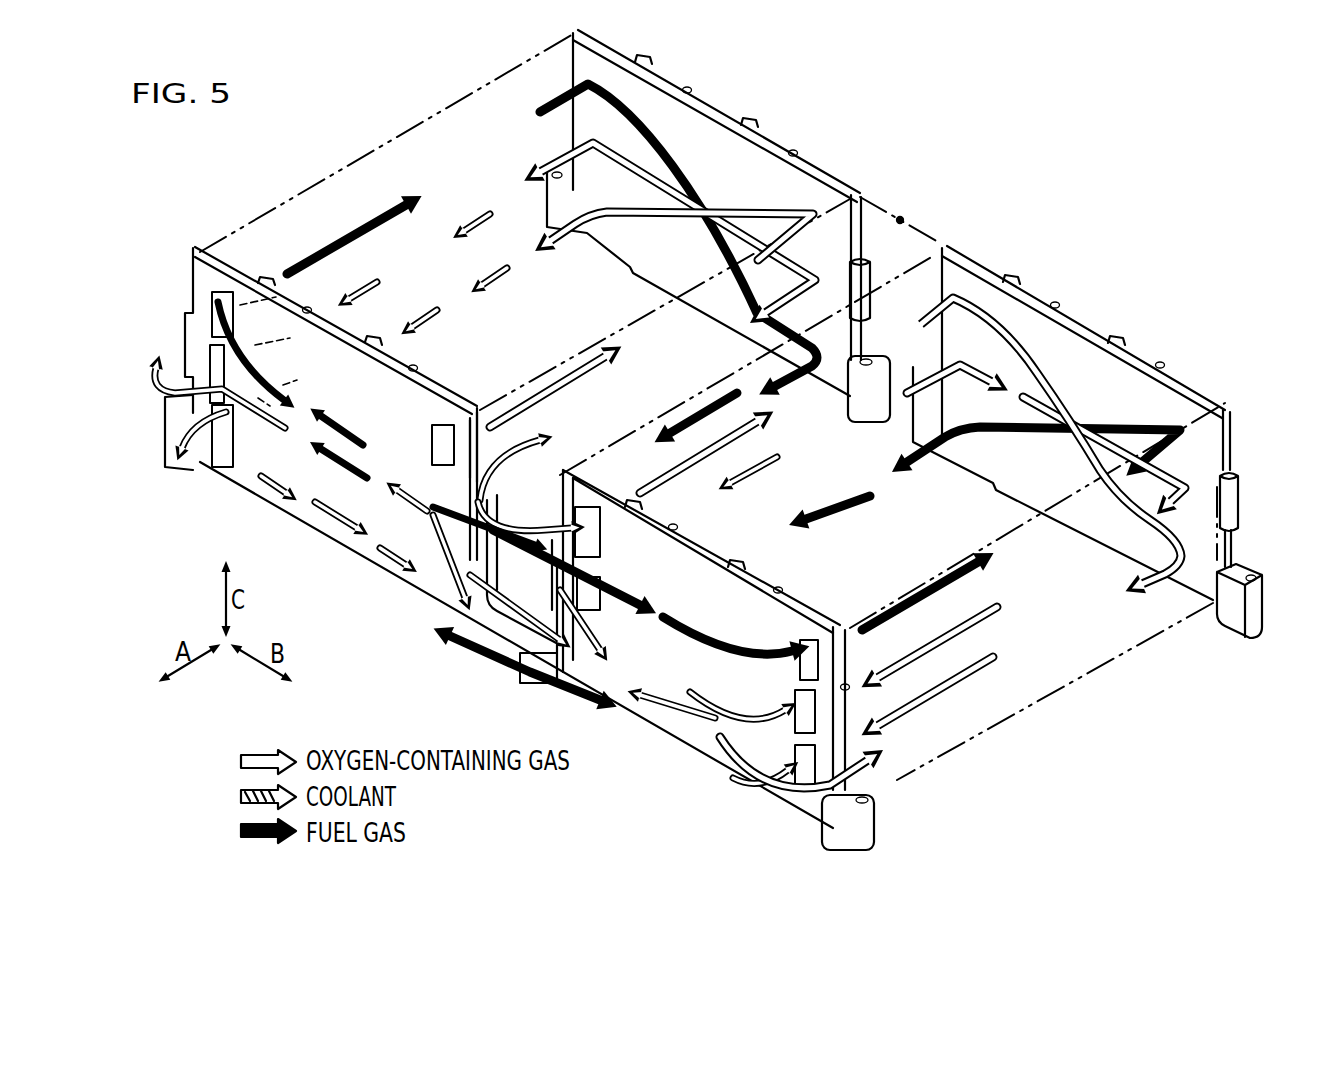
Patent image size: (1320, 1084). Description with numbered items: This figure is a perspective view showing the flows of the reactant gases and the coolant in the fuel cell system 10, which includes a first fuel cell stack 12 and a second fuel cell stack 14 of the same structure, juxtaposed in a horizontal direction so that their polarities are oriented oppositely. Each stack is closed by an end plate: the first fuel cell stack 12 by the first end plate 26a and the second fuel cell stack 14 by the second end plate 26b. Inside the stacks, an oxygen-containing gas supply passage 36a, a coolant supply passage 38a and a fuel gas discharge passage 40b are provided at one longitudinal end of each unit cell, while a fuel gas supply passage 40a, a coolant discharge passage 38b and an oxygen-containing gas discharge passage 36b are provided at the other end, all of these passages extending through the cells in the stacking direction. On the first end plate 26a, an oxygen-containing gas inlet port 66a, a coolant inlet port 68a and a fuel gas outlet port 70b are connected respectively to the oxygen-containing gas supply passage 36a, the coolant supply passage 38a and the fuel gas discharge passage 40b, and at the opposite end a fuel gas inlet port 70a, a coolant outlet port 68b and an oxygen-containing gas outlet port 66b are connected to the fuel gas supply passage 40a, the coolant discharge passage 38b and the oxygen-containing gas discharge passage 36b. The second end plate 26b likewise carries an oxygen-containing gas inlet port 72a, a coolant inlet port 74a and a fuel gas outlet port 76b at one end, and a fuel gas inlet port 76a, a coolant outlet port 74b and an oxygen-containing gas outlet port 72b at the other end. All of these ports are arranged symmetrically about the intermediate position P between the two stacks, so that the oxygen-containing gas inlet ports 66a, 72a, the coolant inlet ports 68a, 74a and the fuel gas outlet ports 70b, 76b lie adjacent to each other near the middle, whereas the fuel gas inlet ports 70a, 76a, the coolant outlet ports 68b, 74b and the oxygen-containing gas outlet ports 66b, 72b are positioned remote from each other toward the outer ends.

The fuel cell system 10 is at (357, 120).
The first fuel cell stack 12 is at (1110, 314).
The second fuel cell stack 14 is at (708, 78).
The intermediate position P is at (900, 206).
The first end plate 26a is at (784, 610).
The second end plate 26b is at (430, 407).
The oxygen-containing gas supply passage 36a is at (557, 376).
The oxygen-containing gas discharge passage 36b is at (484, 288).
The coolant supply passage 38a is at (718, 382).
The coolant discharge passage 38b is at (477, 220).
The fuel gas supply passage 40a is at (374, 225).
The fuel gas discharge passage 40b is at (674, 427).
The oxygen-containing gas inlet port 66a is at (572, 512).
The oxygen-containing gas outlet port 66b is at (795, 750).
The coolant inlet port 68a is at (598, 578).
The coolant outlet port 68b is at (795, 690).
The fuel gas inlet port 70a is at (800, 640).
The fuel gas outlet port 70b is at (592, 668).
The oxygen-containing gas inlet port 72a is at (431, 440).
The oxygen-containing gas outlet port 72b is at (214, 427).
The coolant inlet port 74a is at (440, 490).
The coolant outlet port 74b is at (214, 355).
The fuel gas inlet port 76a is at (214, 306).
The fuel gas outlet port 76b is at (436, 548).